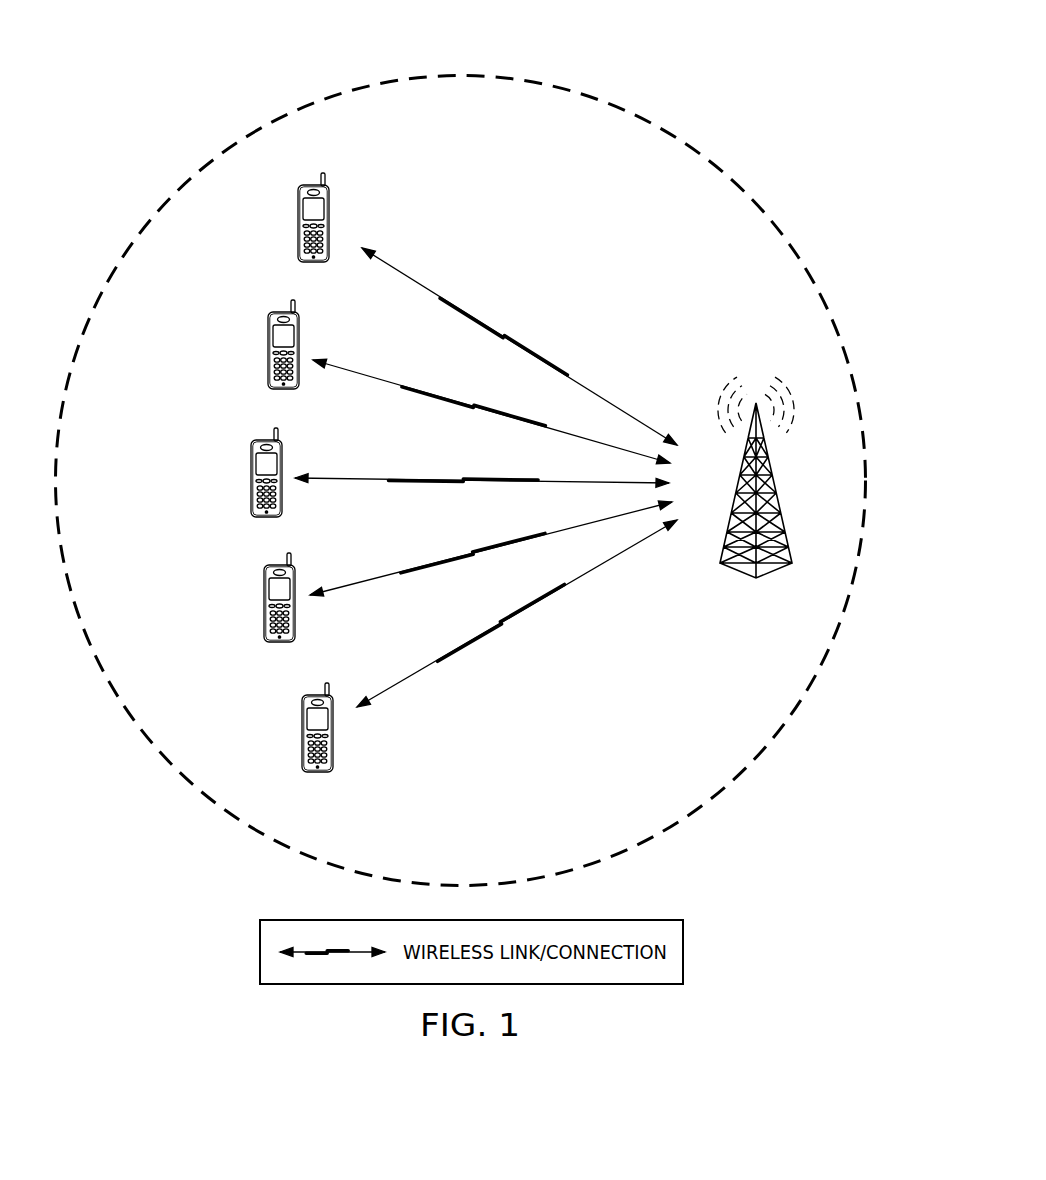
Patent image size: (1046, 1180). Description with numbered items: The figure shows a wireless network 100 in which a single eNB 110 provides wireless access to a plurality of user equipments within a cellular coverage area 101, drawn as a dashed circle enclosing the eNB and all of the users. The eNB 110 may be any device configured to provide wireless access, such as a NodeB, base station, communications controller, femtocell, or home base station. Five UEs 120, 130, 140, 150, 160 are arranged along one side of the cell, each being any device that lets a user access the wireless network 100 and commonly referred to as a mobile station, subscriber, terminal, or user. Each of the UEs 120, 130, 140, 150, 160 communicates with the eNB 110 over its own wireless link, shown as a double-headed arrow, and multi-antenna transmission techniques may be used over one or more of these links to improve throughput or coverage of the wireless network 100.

The wireless network 100 is at (720, 60).
The cellular coverage area 101 is at (480, 132).
The eNB 110 is at (785, 506).
The UE 120 is at (298, 207).
The UE 130 is at (268, 333).
The UE 140 is at (251, 463).
The UE 150 is at (264, 618).
The UE 160 is at (302, 748).